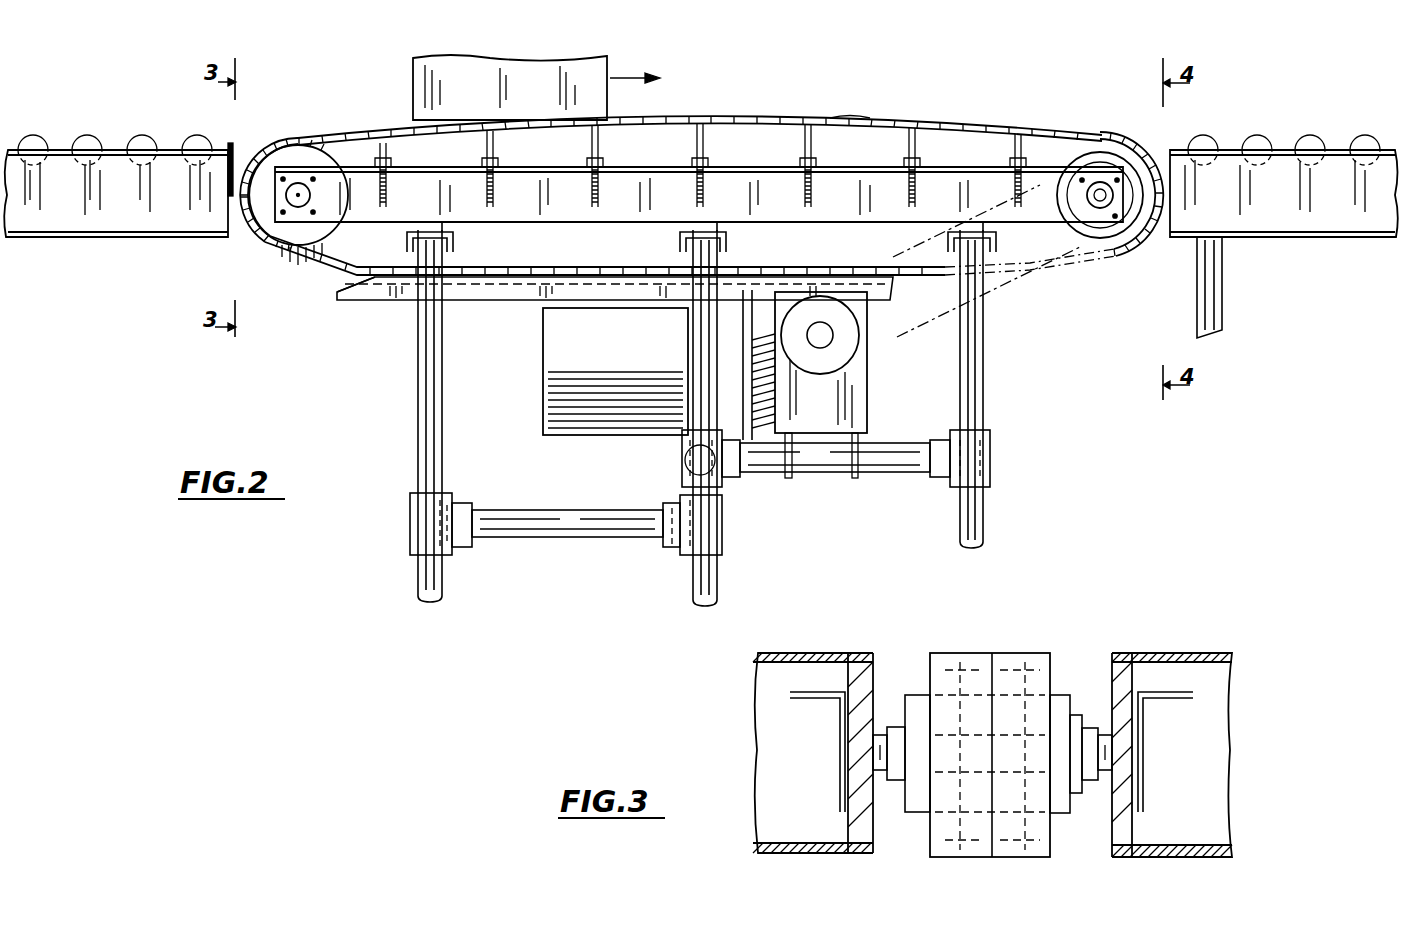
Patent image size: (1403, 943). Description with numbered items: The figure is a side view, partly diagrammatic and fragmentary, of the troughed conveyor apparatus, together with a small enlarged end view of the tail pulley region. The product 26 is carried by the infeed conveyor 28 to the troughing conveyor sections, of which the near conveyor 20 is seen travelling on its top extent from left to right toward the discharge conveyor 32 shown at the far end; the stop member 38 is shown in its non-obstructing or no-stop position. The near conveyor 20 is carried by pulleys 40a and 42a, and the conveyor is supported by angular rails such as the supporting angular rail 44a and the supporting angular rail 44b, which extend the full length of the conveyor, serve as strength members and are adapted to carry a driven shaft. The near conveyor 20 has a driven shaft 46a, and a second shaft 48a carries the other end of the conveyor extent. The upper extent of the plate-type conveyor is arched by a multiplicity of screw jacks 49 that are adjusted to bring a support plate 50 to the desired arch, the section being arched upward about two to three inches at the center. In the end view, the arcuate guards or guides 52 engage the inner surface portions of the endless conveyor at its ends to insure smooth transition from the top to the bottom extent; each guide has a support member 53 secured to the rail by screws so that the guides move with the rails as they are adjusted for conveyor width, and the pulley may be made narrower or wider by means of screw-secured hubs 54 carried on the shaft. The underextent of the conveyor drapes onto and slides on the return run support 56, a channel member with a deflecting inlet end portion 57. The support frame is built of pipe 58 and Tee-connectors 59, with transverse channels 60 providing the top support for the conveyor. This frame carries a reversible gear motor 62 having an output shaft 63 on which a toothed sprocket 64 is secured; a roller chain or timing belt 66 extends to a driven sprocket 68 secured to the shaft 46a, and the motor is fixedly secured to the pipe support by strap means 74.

In FIG. 2, the near conveyor extent 20 is at (758, 117).
In FIG. 2, the product 26 is at (483, 90).
In FIG. 2, the infeed conveyor 28 is at (171, 118).
In FIG. 2, the discharge conveyor 32 is at (1268, 111).
In FIG. 2, the stop member 38 is at (233, 150).
In FIG. 2, the pulley 40a is at (288, 233).
In FIG. 3, the pulley 40a is at (952, 650).
In FIG. 2, the pulley 42a is at (1128, 226).
In FIG. 3, the supporting angular rail 44a is at (795, 698).
In FIG. 2, the supporting angular rail 44b is at (562, 201).
In FIG. 2, the driven shaft 46a is at (1098, 200).
In FIG. 2, the shaft 48a is at (298, 188).
In FIG. 2, the screw jacks 49 is at (700, 146).
In FIG. 2, the support plate 50 is at (838, 138).
In FIG. 3, the arcuate guard or guide 52 is at (790, 653).
In FIG. 3, the support member 53 is at (874, 683).
In FIG. 3, the screw-secured hub 54 is at (920, 695).
In FIG. 2, the return run support 56 is at (507, 292).
In FIG. 2, the deflecting inlet end portion 57 is at (357, 283).
In FIG. 2, the pipe 58 is at (418, 406).
In FIG. 2, the Tee-connector 59 is at (410, 521).
In FIG. 2, the transverse channel 60 is at (723, 242).
In FIG. 2, the reversible gear motor 62 is at (620, 417).
In FIG. 2, the output shaft 63 is at (824, 338).
In FIG. 2, the toothed sprocket 64 is at (836, 352).
In FIG. 2, the roller chain or timing belt 66 is at (993, 283).
In FIG. 2, the driven sprocket 68 is at (1050, 241).
In FIG. 2, the strap means 74 is at (848, 478).